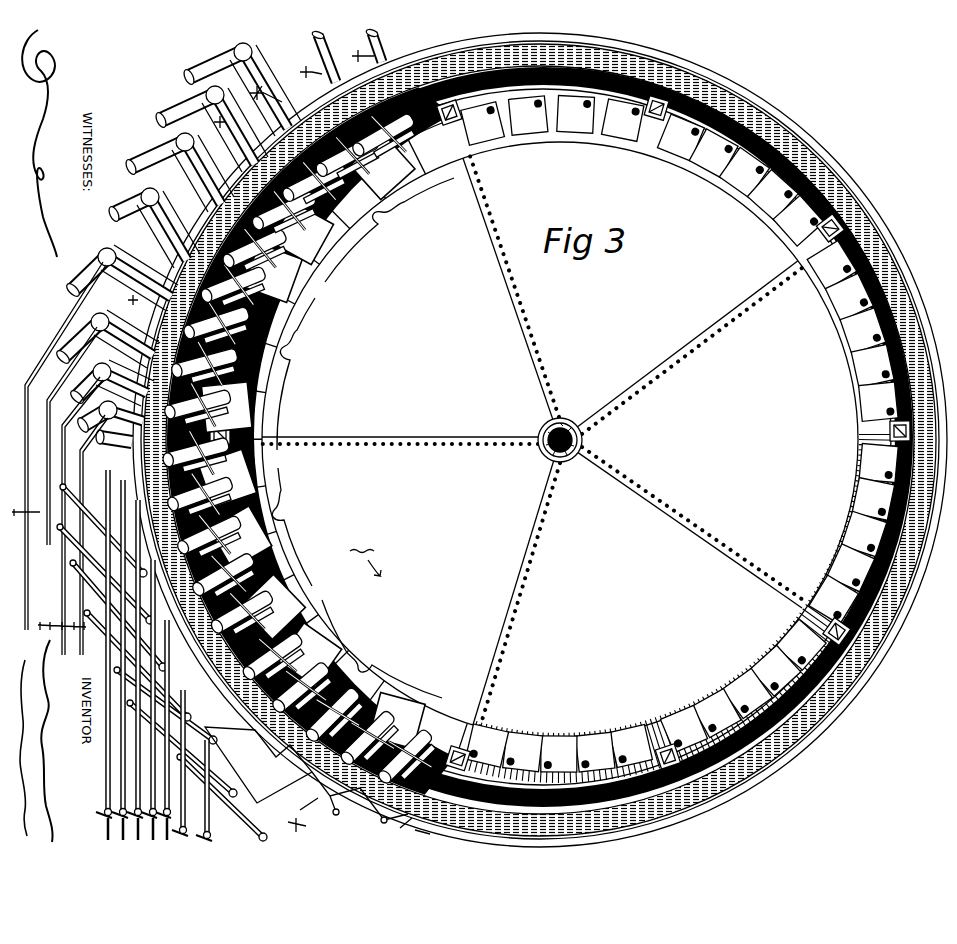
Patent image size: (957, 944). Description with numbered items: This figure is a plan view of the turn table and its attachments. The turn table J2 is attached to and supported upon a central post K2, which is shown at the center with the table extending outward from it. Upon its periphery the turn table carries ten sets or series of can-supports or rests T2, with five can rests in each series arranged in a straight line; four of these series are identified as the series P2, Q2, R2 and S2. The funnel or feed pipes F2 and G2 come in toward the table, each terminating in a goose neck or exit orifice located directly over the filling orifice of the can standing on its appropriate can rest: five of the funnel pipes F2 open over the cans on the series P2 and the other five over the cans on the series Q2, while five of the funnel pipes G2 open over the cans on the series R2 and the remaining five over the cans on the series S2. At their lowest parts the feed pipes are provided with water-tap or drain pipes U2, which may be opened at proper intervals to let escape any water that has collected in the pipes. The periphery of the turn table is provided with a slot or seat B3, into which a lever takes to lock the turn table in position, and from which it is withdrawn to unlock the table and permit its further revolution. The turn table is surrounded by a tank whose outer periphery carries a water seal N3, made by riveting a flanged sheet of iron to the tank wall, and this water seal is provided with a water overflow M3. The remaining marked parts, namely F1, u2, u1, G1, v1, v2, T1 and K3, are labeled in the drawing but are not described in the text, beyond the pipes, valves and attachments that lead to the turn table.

The funnel pipe F2 is at (385, 42).
The supply pipe F1 is at (85, 265).
The water-tap or drain pipe U2 is at (197, 225).
The valve u2 is at (294, 89).
The valve u1 is at (139, 294).
The water overflow M3 is at (114, 452).
The conduit G1 is at (139, 551).
The funnel pipe G2 is at (306, 780).
The valve pipe v1 is at (221, 655).
The valve pipe v2 is at (329, 793).
The coil block T1 is at (311, 442).
The can-support or rest T2 is at (679, 434).
The slot or seat B3 is at (462, 738).
The series of can rests P2 is at (389, 230).
The series of can rests Q2 is at (304, 374).
The series of can rests R2 is at (326, 527).
The series of can rests S2 is at (382, 649).
The turn table J2 is at (534, 441).
The central post K2 is at (583, 441).
The rim band K3 is at (820, 187).
The water seal N3 is at (812, 140).